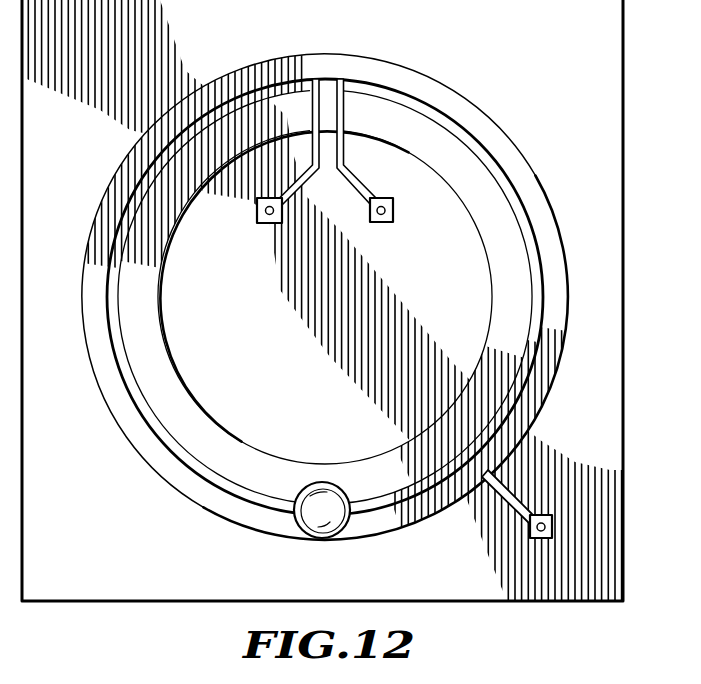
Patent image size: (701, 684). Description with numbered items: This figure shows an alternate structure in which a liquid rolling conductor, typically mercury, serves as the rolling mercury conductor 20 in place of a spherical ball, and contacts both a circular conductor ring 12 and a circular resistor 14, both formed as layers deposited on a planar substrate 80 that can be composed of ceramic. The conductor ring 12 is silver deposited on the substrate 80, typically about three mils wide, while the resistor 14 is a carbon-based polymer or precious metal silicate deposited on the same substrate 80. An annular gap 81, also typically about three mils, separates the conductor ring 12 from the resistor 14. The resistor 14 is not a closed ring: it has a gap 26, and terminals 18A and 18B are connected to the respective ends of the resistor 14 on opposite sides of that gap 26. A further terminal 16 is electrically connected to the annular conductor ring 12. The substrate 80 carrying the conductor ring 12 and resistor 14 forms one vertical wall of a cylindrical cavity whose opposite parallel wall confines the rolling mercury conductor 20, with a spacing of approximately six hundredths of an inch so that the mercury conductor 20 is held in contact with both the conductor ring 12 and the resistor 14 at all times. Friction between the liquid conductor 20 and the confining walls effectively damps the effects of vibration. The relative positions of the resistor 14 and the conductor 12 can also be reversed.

The planar substrate 80 is at (617, 38).
The circular conductor ring 12 is at (458, 111).
The annular gap 81 is at (413, 100).
The circular resistor 14 is at (357, 477).
The gap 26 is at (327, 93).
The terminal 18A is at (263, 222).
The terminal 18B is at (384, 223).
The terminal 16 is at (553, 523).
The rolling mercury conductor 20 is at (303, 531).